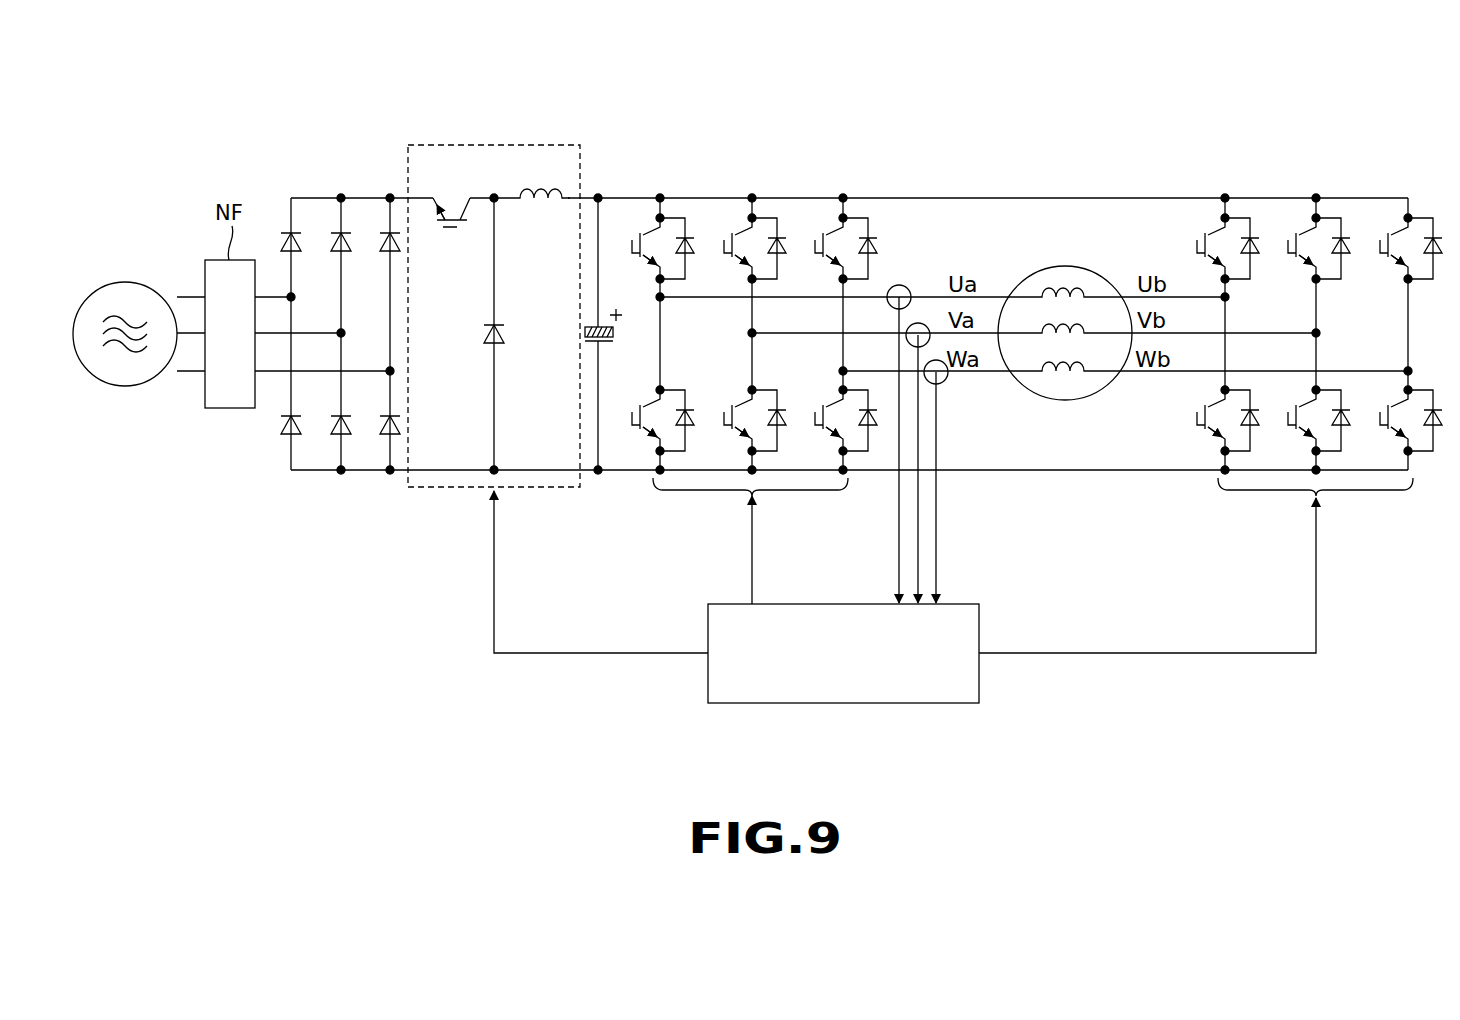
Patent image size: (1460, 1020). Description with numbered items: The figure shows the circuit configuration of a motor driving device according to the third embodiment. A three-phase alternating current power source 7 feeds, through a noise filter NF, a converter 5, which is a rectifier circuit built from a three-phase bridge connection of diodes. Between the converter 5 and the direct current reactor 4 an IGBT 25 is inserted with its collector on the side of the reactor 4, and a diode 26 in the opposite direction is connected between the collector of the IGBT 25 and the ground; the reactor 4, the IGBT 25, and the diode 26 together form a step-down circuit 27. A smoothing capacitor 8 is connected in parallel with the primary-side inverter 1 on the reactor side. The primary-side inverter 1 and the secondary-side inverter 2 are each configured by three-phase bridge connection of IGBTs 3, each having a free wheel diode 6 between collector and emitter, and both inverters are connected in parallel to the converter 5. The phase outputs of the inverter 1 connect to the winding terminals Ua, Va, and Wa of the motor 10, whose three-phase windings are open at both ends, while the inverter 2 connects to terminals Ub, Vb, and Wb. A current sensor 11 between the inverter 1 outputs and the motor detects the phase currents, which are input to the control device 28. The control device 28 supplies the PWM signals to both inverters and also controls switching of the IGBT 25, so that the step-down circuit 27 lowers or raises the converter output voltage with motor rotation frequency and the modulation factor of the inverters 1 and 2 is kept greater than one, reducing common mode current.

The primary-side inverter 1 is at (751, 316).
The secondary-side inverter 2 is at (1260, 190).
The IGBT 3 is at (650, 395).
The direct current reactor 4 is at (545, 189).
The converter 5 is at (345, 182).
The free wheel diode 6 is at (698, 408).
The three-phase alternating current power source 7 is at (122, 281).
The smoothing capacitor 8 is at (580, 325).
The motor 10 is at (1063, 266).
The current sensor 11 is at (947, 382).
The IGBT 25 is at (450, 205).
The diode 26 is at (483, 334).
The step-down circuit 27 is at (493, 145).
The control device 28 is at (953, 603).